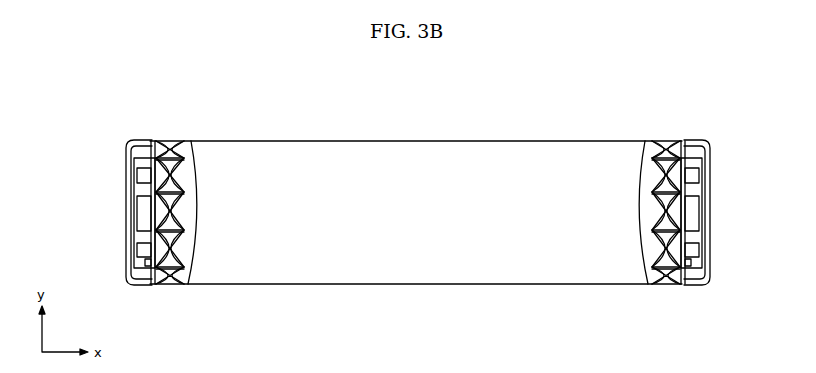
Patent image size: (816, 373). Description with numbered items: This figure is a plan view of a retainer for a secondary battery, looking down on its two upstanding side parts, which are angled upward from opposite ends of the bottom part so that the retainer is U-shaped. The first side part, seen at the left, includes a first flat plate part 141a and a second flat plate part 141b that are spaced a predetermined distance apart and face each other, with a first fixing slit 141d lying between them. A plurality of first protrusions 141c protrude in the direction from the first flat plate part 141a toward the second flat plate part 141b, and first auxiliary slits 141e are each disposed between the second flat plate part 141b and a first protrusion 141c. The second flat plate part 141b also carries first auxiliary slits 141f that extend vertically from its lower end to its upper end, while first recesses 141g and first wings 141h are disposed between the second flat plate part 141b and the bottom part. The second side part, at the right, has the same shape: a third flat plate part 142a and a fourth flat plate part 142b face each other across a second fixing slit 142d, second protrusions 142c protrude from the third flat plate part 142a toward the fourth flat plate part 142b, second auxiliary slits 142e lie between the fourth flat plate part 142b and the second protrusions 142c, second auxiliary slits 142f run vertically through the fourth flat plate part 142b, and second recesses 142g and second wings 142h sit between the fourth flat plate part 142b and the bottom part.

The first flat plate part 141a is at (133, 182).
The second flat plate part 141b is at (137, 250).
The first protrusions 141c is at (145, 150).
The first fixing slit 141d is at (137, 212).
The first auxiliary slits 141e is at (150, 264).
The first auxiliary slits 141f is at (188, 284).
The first recesses 141g is at (191, 141).
The first wings 141h is at (160, 156).
The third flat plate part 142a is at (696, 176).
The fourth flat plate part 142b is at (698, 210).
The second protrusions 142c is at (703, 270).
The second fixing slit 142d is at (703, 218).
The second auxiliary slits 142e is at (692, 158).
The second auxiliary slits 142f is at (690, 237).
The second recesses 142g is at (658, 188).
The second wings 142h is at (664, 155).